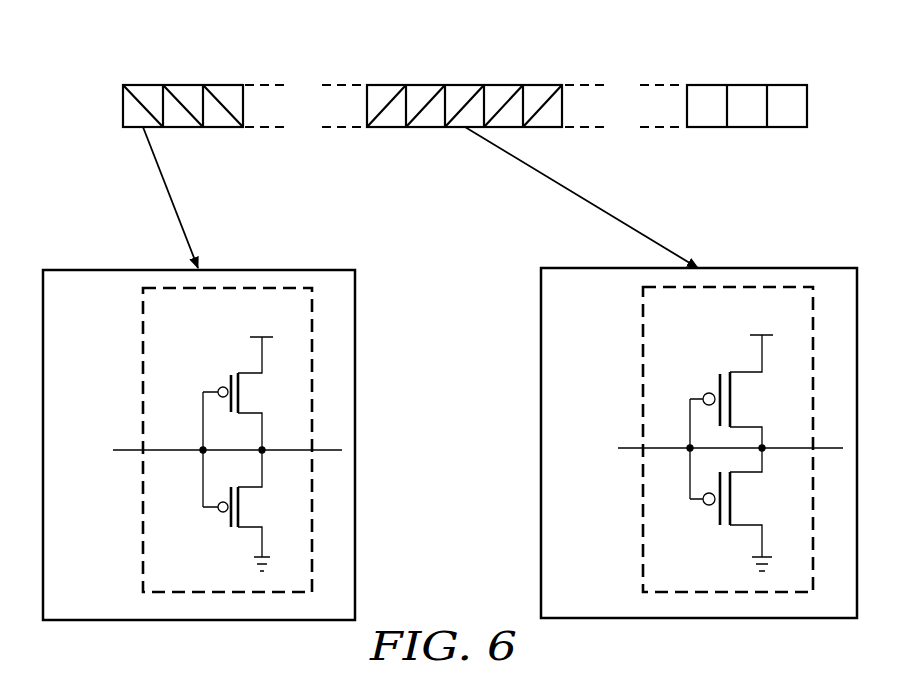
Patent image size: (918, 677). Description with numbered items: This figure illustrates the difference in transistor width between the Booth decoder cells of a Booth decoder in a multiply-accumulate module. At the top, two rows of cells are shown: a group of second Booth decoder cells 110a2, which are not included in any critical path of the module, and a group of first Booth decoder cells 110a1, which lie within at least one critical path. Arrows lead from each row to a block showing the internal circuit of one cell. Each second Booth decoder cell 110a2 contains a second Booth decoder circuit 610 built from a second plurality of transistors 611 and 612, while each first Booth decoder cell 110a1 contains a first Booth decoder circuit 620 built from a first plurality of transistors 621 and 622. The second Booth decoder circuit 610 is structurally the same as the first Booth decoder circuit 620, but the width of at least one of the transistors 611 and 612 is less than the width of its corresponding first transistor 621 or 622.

The second Booth decoder cell 110a2 is at (145, 85).
The first Booth decoder cell 110a1 is at (463, 85).
The second Booth decoder circuit 610 is at (227, 440).
The second transistor 611 is at (229, 384).
The second transistor 612 is at (221, 514).
The first Booth decoder circuit 620 is at (730, 439).
The first transistor 621 is at (736, 410).
The first transistor 622 is at (737, 509).